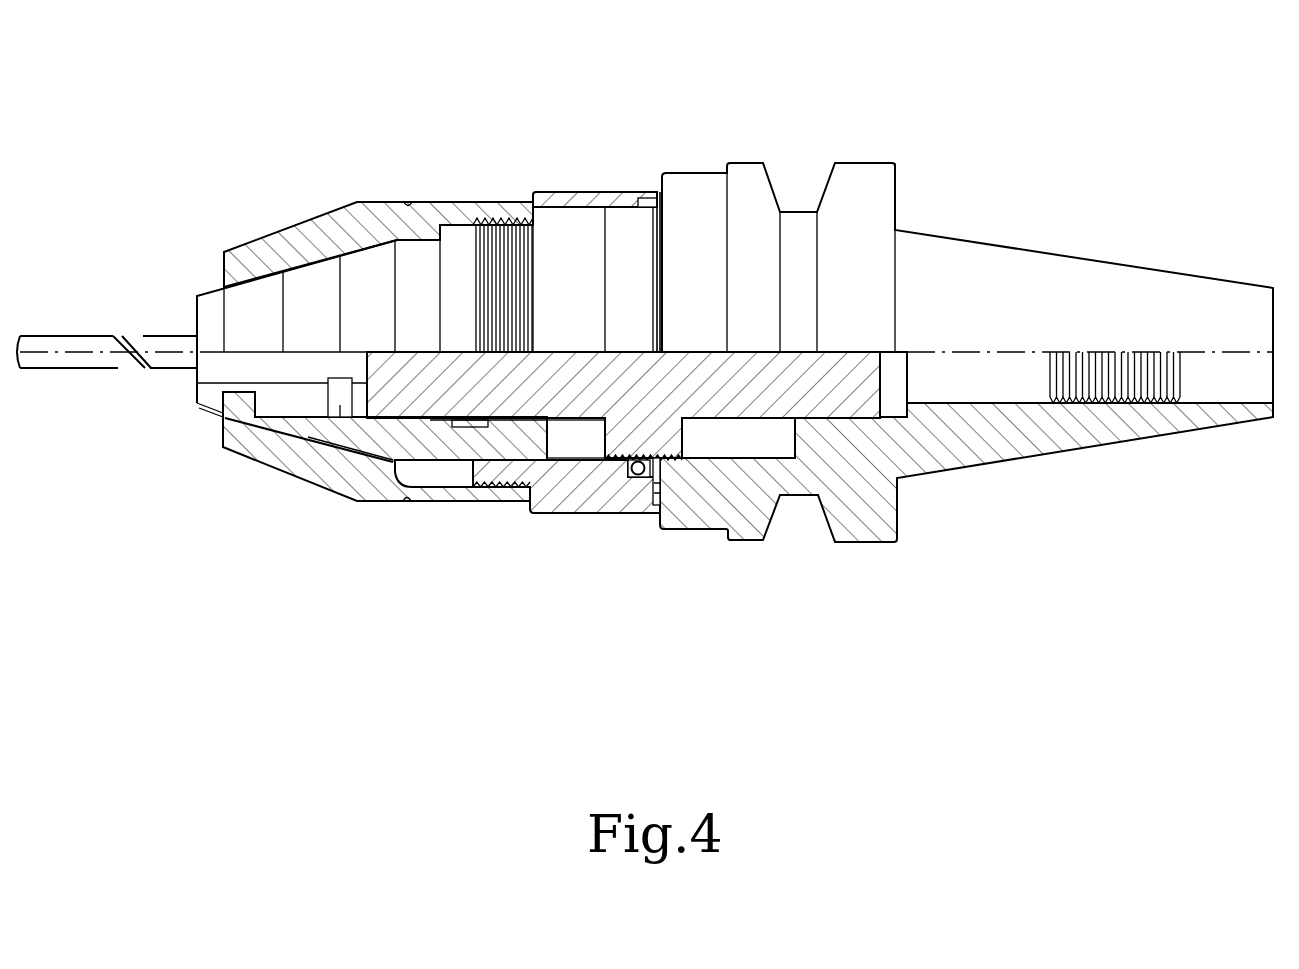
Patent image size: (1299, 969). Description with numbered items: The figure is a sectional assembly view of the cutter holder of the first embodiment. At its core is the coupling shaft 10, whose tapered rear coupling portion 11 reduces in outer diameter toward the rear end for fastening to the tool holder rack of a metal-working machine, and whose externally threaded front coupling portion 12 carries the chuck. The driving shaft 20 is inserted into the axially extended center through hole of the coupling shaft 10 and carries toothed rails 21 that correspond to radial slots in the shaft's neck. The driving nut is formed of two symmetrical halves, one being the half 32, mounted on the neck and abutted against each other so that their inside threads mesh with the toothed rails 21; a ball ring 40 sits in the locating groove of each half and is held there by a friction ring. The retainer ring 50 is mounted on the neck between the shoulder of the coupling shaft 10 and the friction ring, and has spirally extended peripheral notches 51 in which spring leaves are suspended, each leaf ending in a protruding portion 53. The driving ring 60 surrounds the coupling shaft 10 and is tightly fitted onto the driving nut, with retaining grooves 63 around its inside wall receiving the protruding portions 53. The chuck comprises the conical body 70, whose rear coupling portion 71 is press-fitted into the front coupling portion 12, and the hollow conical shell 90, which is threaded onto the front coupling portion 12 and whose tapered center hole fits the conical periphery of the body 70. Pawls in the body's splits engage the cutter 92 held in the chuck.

The coupling shaft 10 is at (869, 140).
The tapered rear coupling portion 11 is at (1083, 433).
The externally threaded front coupling portion 12 is at (498, 207).
The driving shaft 20 is at (880, 378).
The toothed rails 21 is at (740, 473).
The symmetrical half of driving nut 32 is at (615, 483).
The ball ring 40 is at (637, 478).
The retainer ring 50 is at (670, 435).
The spirally extended peripheral notches 51 is at (656, 505).
The protruding portion 53 is at (658, 192).
The driving ring 60 is at (558, 197).
The retaining grooves 63 is at (640, 202).
The body 70 is at (340, 435).
The rear coupling portion 71 is at (512, 455).
The shell 90 is at (288, 243).
The cutter 92 is at (76, 336).